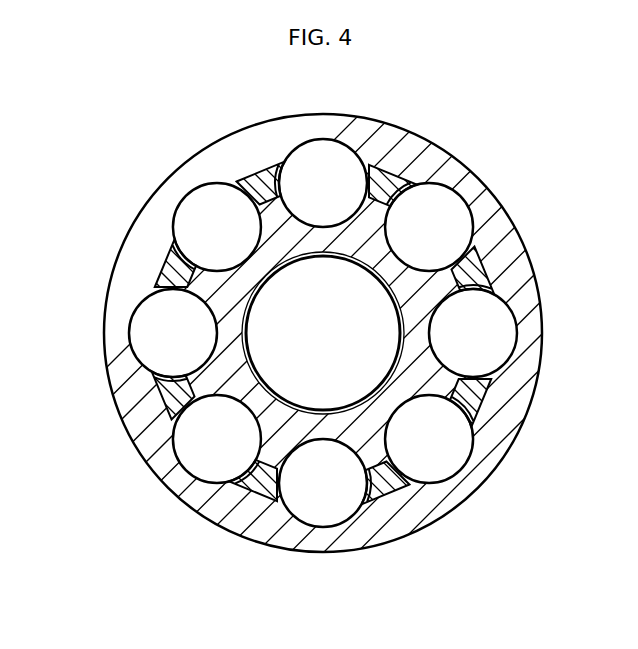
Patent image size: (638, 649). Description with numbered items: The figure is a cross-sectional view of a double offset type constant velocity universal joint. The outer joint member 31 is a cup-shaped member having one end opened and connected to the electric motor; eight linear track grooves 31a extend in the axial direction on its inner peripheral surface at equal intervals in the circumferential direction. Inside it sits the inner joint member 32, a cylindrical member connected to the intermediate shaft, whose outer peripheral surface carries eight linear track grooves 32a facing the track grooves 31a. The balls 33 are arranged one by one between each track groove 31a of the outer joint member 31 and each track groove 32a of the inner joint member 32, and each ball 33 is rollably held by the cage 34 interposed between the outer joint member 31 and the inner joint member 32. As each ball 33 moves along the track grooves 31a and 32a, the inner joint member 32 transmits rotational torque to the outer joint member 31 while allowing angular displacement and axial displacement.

The outer joint member 31 is at (142, 254).
The track groove 31a is at (444, 206).
The inner joint member 32 is at (234, 416).
The track groove 32a is at (440, 310).
The ball 33 is at (313, 493).
The cage 34 is at (383, 484).